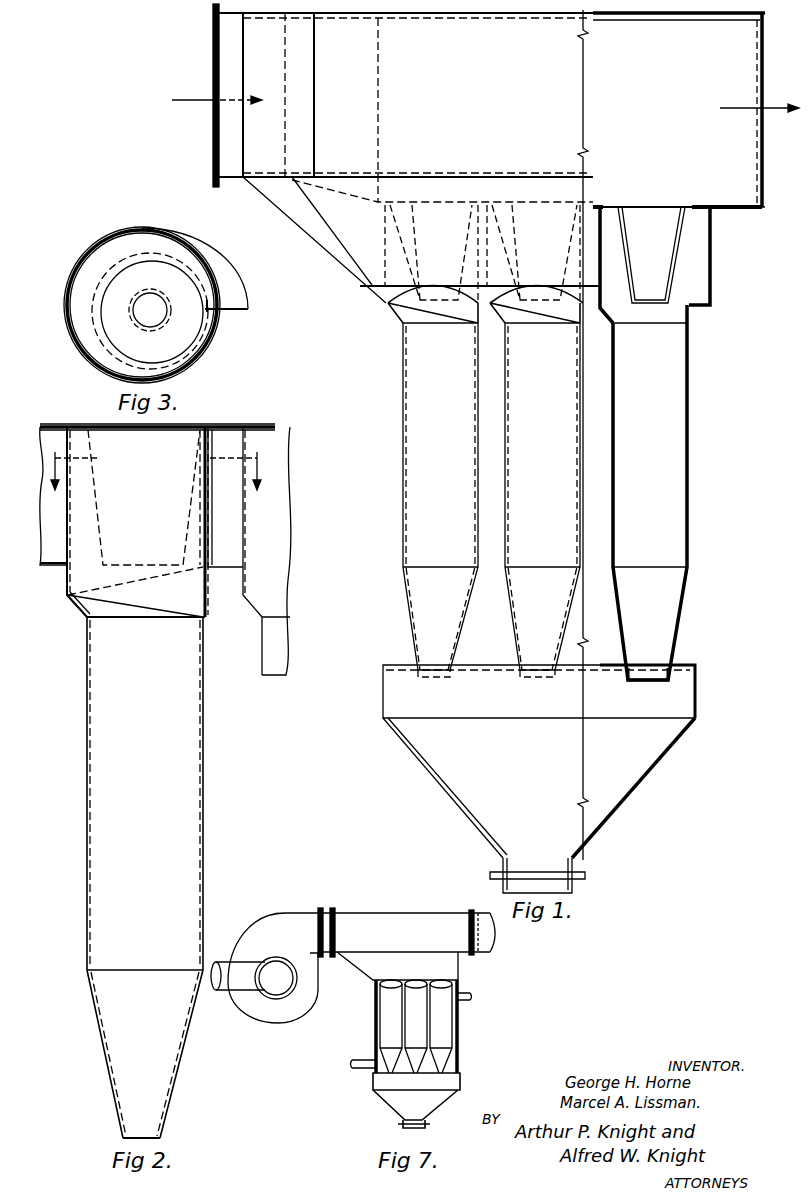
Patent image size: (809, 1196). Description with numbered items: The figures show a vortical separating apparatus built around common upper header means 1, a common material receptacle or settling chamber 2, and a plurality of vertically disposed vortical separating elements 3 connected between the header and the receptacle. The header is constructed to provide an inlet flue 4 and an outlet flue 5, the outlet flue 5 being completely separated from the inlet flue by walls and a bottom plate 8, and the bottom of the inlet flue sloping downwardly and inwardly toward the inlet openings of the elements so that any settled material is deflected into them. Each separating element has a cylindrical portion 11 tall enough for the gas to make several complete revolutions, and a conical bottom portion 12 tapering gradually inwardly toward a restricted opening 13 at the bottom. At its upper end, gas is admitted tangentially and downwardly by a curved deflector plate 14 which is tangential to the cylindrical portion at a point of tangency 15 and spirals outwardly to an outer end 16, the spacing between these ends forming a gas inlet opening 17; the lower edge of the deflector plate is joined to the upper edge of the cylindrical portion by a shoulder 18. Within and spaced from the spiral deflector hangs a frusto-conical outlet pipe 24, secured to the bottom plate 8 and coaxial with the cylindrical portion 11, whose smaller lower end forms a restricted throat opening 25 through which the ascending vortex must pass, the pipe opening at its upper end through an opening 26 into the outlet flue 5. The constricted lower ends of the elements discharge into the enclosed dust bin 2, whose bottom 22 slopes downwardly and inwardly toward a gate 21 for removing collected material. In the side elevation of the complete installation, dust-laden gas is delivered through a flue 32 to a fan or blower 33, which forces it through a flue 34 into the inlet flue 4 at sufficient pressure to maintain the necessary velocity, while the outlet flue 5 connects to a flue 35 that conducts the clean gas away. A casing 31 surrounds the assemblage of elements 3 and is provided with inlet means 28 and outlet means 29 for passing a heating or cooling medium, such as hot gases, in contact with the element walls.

In FIG. 1, the upper header means 1 is at (382, 153).
In FIG. 1, the outlet flue 5 is at (696, 110).
In FIG. 7, the outlet flue 5 is at (467, 918).
In FIG. 1, the openings 26 is at (645, 206).
In FIG. 1, the bottom plate 8 is at (700, 208).
In FIG. 1, the frusto-conical outlet pipe 24 is at (678, 250).
In FIG. 1, the opening 25 is at (650, 305).
In FIG. 1, the vortical separating element 3 is at (690, 408).
In FIG. 2, the vortical separating element 3 is at (154, 482).
In FIG. 7, the vortical separating element 3 is at (440, 1023).
In FIG. 1, the cylindrical portion 11 is at (690, 516).
In FIG. 2, the cylindrical portion 11 is at (203, 750).
In FIG. 1, the conical bottom portion 12 is at (680, 622).
In FIG. 2, the conical bottom portion 12 is at (173, 1074).
In FIG. 1, the restricted opening 13 is at (645, 680).
In FIG. 3, the restricted opening 13 is at (152, 321).
In FIG. 2, the restricted opening 13 is at (150, 1136).
In FIG. 1, the material receptacle 2 is at (697, 710).
In FIG. 1, the bottom 22 is at (632, 796).
In FIG. 1, the gate 21 is at (588, 876).
In FIG. 3, the curved deflector plate 14 is at (104, 252).
In FIG. 2, the curved deflector plate 14 is at (78, 567).
In FIG. 3, the shoulder 18 is at (96, 272).
In FIG. 2, the shoulder 18 is at (82, 612).
In FIG. 3, the gas inlet opening 17 is at (226, 306).
In FIG. 2, the gas inlet opening 17 is at (222, 565).
In FIG. 3, the outer end 16 is at (249, 310).
In FIG. 3, the point of tangency 15 is at (213, 311).
In FIG. 7, the fan or blower 33 is at (293, 916).
In FIG. 7, the flue 32 is at (233, 996).
In FIG. 7, the inlet flue 4 is at (333, 922).
In FIG. 7, the flue 34 is at (329, 955).
In FIG. 7, the flue 35 is at (478, 956).
In FIG. 7, the casing 31 is at (373, 1014).
In FIG. 7, the outlet means 29 is at (470, 1002).
In FIG. 7, the inlet means 28 is at (362, 1057).